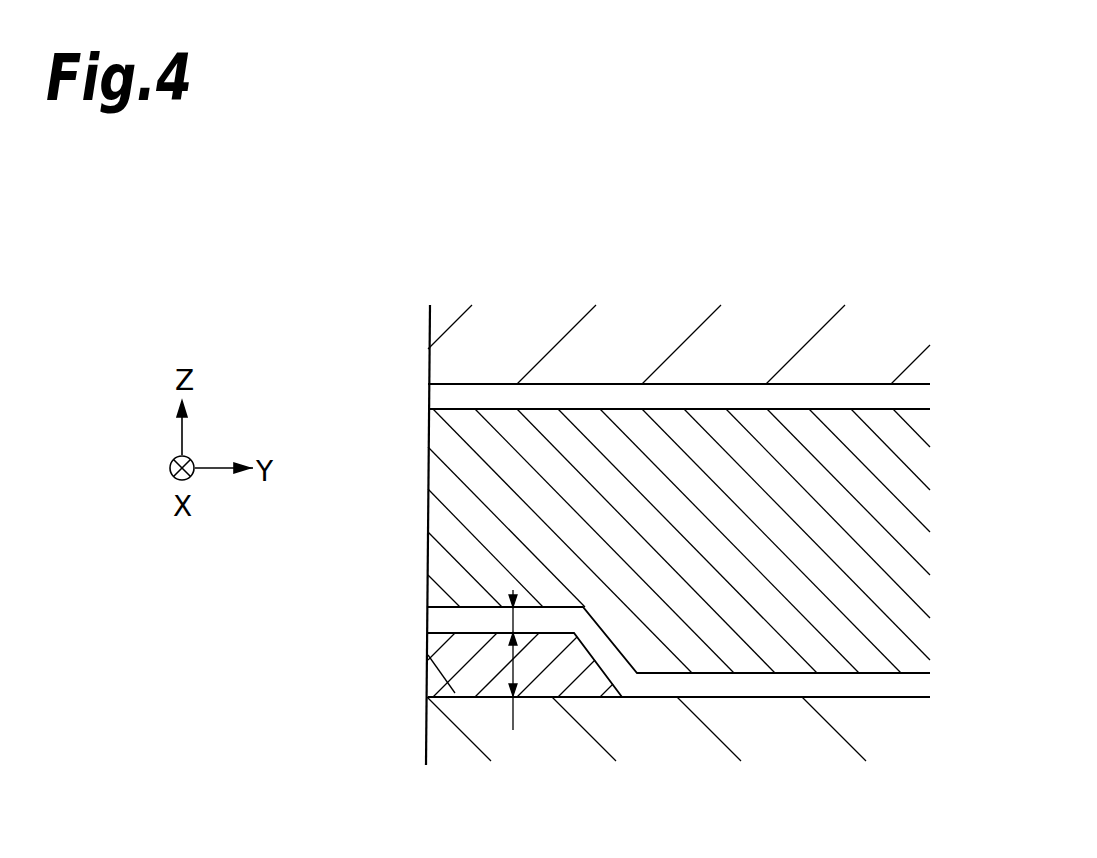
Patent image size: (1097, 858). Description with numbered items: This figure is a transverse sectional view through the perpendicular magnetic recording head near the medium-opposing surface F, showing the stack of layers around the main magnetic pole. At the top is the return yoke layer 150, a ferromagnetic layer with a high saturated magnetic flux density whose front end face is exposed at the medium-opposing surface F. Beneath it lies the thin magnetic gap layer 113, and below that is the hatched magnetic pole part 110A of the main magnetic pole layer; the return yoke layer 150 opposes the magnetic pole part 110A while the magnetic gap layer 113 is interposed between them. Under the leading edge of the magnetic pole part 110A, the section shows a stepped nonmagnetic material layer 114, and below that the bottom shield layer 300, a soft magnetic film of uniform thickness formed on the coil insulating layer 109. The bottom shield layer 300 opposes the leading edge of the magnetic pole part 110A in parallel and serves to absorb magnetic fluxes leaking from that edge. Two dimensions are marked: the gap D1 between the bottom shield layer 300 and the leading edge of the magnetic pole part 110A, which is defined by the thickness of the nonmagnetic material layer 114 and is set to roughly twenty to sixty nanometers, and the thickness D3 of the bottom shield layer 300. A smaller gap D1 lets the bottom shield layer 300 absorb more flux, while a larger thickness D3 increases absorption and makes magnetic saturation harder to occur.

The return yoke layer 150 is at (492, 356).
The magnetic gap layer 113 is at (492, 395).
The magnetic pole part 110A is at (503, 488).
The nonmagnetic material layer 114 is at (438, 622).
The bottom shield layer 300 is at (492, 679).
The coil insulating layer 109 is at (453, 753).
The medium-opposing surface F is at (422, 318).
The gap D1 is at (513, 618).
The thickness D3 is at (513, 668).